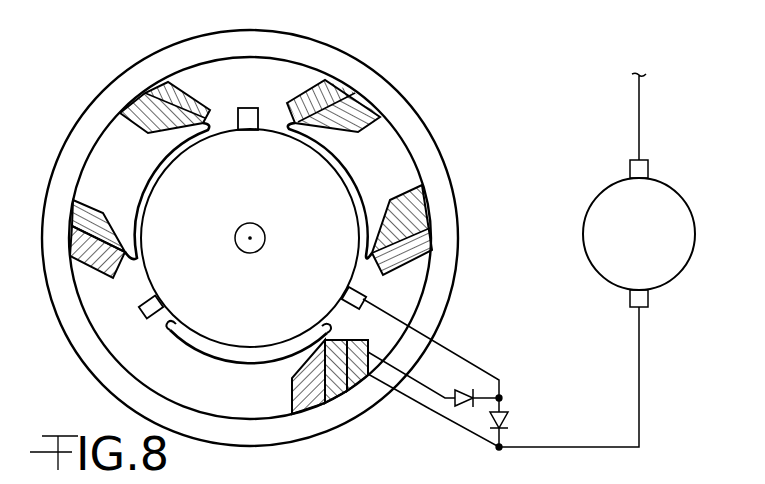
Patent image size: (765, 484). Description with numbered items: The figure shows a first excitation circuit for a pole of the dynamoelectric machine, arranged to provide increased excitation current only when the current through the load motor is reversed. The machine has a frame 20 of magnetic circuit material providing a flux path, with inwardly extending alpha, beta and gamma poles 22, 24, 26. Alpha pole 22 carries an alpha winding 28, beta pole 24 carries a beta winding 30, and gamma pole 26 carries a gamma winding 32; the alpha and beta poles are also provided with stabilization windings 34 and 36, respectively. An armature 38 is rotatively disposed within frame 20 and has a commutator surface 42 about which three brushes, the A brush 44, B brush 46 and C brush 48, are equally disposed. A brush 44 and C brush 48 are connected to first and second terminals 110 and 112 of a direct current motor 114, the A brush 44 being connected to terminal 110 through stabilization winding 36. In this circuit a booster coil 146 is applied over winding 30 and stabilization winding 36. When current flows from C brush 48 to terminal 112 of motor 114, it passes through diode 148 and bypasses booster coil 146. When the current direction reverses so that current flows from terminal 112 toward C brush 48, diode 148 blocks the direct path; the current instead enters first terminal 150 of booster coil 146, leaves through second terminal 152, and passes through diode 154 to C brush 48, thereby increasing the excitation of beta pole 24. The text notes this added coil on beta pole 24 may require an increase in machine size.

The frame 20 is at (178, 49).
The alpha pole 22 is at (101, 152).
The beta pole 24 is at (239, 408).
The gamma pole 26 is at (401, 168).
The alpha winding 28 is at (86, 223).
The beta winding 30 is at (312, 407).
The gamma winding 32 is at (357, 110).
The stabilization winding 34 is at (92, 261).
The stabilization winding 36 is at (330, 388).
The armature 38 is at (225, 142).
The commutator surface 42 is at (270, 130).
The A brush 44 is at (247, 117).
The B brush 46 is at (140, 311).
The C brush 48 is at (366, 290).
The first terminal 110 is at (639, 130).
The second terminal 112 is at (640, 353).
The direct current motor 114 is at (663, 243).
The booster coil 146 is at (352, 380).
The diode 148 is at (510, 418).
The first terminal 150 is at (475, 437).
The second terminal 152 is at (427, 390).
The diode 154 is at (465, 390).